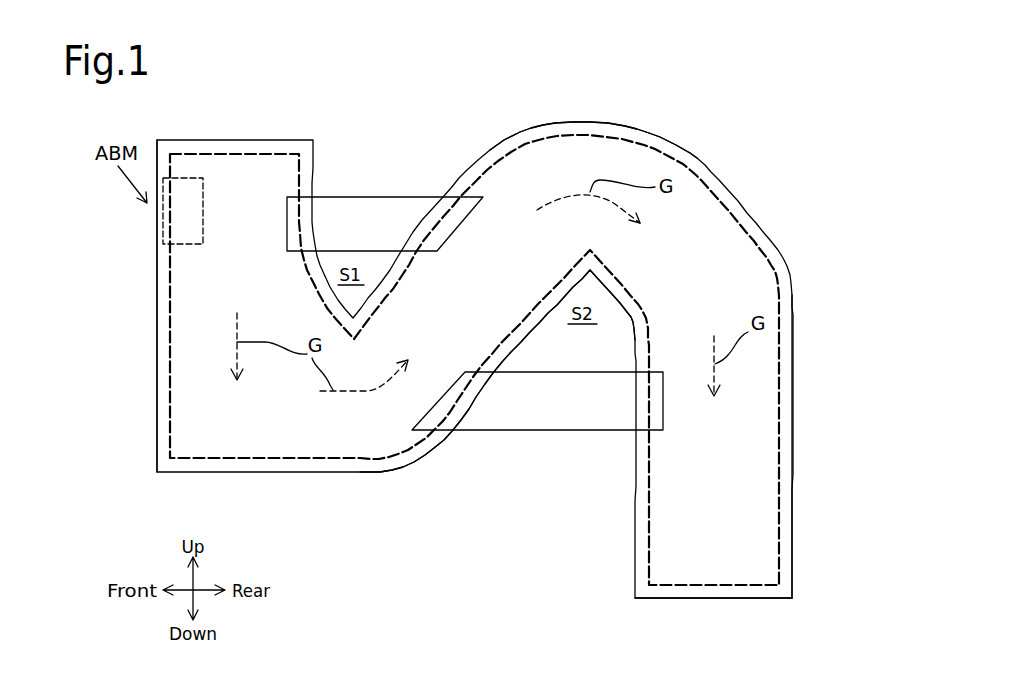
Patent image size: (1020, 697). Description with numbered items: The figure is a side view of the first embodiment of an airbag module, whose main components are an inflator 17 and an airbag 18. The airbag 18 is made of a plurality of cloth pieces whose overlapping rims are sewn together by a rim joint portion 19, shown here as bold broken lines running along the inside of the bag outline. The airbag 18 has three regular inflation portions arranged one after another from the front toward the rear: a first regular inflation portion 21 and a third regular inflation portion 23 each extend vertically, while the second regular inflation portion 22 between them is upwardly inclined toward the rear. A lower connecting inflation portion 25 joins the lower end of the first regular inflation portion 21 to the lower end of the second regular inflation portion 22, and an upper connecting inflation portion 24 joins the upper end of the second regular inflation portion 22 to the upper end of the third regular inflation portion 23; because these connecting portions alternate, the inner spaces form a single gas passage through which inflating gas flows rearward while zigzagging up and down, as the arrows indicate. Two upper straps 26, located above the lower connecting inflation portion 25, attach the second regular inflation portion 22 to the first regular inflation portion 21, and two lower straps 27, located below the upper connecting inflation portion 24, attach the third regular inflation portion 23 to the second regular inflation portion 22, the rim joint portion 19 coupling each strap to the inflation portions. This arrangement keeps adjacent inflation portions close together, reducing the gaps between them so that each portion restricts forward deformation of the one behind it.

The inflator 17 is at (205, 212).
The airbag 18 is at (759, 159).
The rim joint portion 19 is at (648, 563).
The first regular inflation portion 21 is at (183, 386).
The second regular inflation portion 22 is at (500, 328).
The third regular inflation portion 23 is at (760, 398).
The upper connecting inflation portion 24 is at (592, 148).
The lower connecting inflation portion 25 is at (363, 438).
The upper strap 26 is at (370, 197).
The lower strap 27 is at (535, 424).